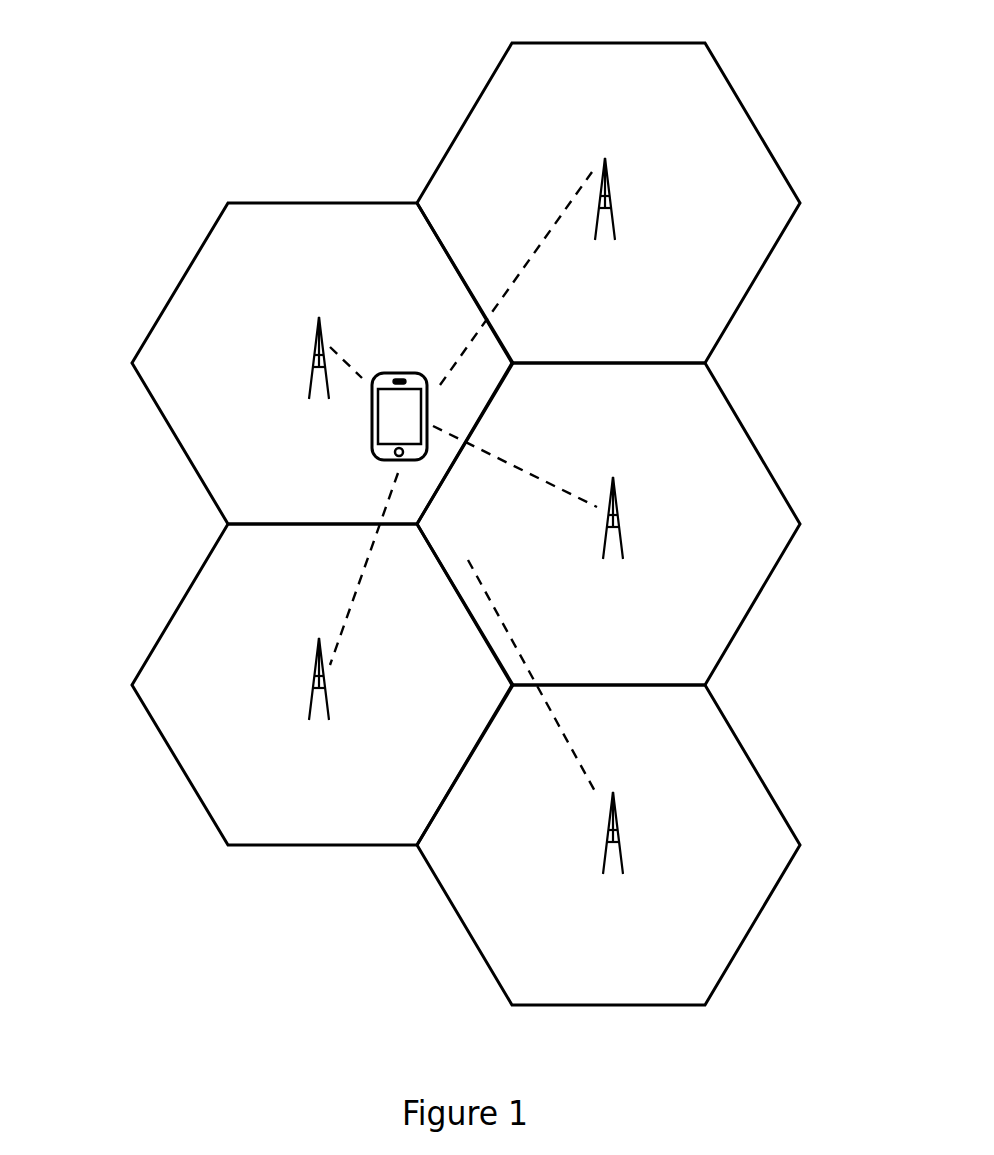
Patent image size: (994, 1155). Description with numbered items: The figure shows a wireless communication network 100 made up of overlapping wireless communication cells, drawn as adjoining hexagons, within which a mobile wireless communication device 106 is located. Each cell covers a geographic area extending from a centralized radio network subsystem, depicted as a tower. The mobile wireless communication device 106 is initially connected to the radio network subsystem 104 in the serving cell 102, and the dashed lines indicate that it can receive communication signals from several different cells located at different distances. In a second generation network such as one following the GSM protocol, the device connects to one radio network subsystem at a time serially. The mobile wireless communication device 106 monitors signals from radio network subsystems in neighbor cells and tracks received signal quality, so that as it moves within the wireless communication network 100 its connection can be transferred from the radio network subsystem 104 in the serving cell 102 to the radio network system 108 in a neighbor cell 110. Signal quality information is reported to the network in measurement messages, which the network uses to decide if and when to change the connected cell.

The wireless communication network 100 is at (116, 71).
The serving cell 102 is at (205, 239).
The radio network subsystem 104 is at (337, 330).
The mobile wireless communication device 106 is at (372, 417).
The radio network system 108 is at (625, 493).
The neighbor cell 110 is at (738, 417).